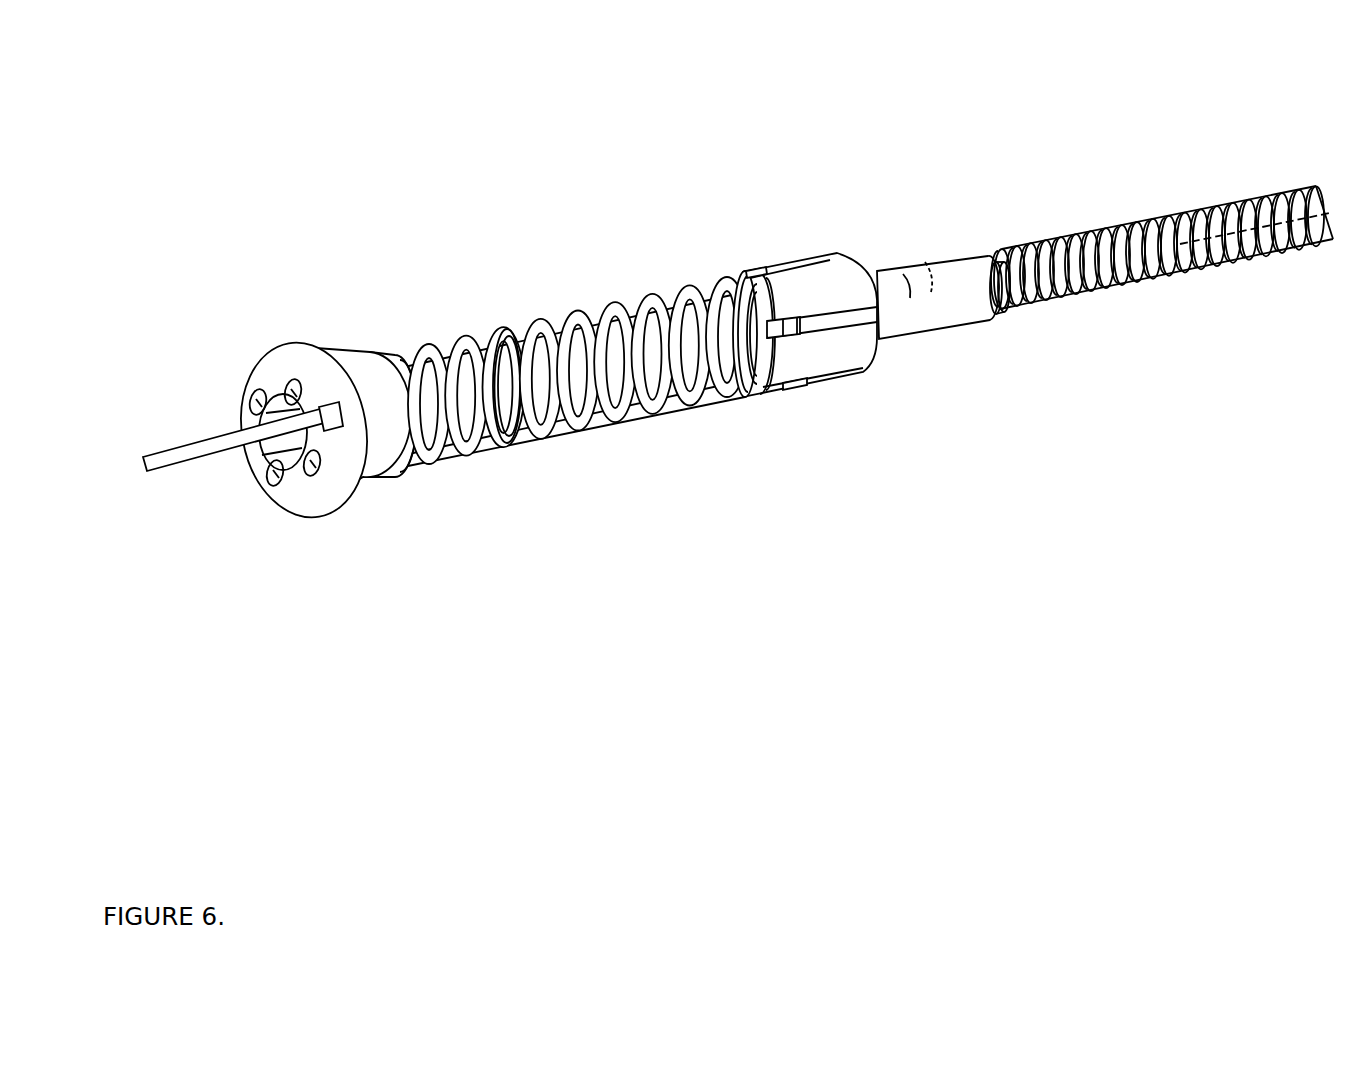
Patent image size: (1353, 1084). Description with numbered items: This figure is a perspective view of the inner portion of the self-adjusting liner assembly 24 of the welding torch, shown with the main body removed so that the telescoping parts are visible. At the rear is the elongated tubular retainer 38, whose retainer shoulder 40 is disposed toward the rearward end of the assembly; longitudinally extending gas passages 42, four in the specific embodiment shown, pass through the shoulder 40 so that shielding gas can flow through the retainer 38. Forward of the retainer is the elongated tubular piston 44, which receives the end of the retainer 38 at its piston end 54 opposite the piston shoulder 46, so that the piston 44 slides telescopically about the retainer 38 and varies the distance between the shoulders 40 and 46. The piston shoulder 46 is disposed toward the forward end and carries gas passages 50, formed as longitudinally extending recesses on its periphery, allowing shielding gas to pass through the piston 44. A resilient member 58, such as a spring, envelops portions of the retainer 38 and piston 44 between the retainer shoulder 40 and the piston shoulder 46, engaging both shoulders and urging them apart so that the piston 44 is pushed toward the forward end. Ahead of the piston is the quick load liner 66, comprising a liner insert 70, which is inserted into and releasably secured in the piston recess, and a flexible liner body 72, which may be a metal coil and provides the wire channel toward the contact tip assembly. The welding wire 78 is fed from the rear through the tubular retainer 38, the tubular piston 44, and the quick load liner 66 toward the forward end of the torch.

The self-adjusting liner assembly 24 is at (695, 322).
The elongated tubular retainer 38 is at (406, 333).
The retainer shoulder 40 is at (255, 392).
The gas passage 42 is at (293, 392).
The elongated tubular piston 44 is at (586, 417).
The piston shoulder 46 is at (815, 300).
The gas passage 50 is at (815, 331).
The piston end 54 is at (525, 318).
The resilient member 58 is at (578, 384).
The quick load liner 66 is at (1162, 235).
The liner insert 70 is at (961, 227).
The flexible liner body 72 is at (1157, 271).
The welding wire 78 is at (200, 405).